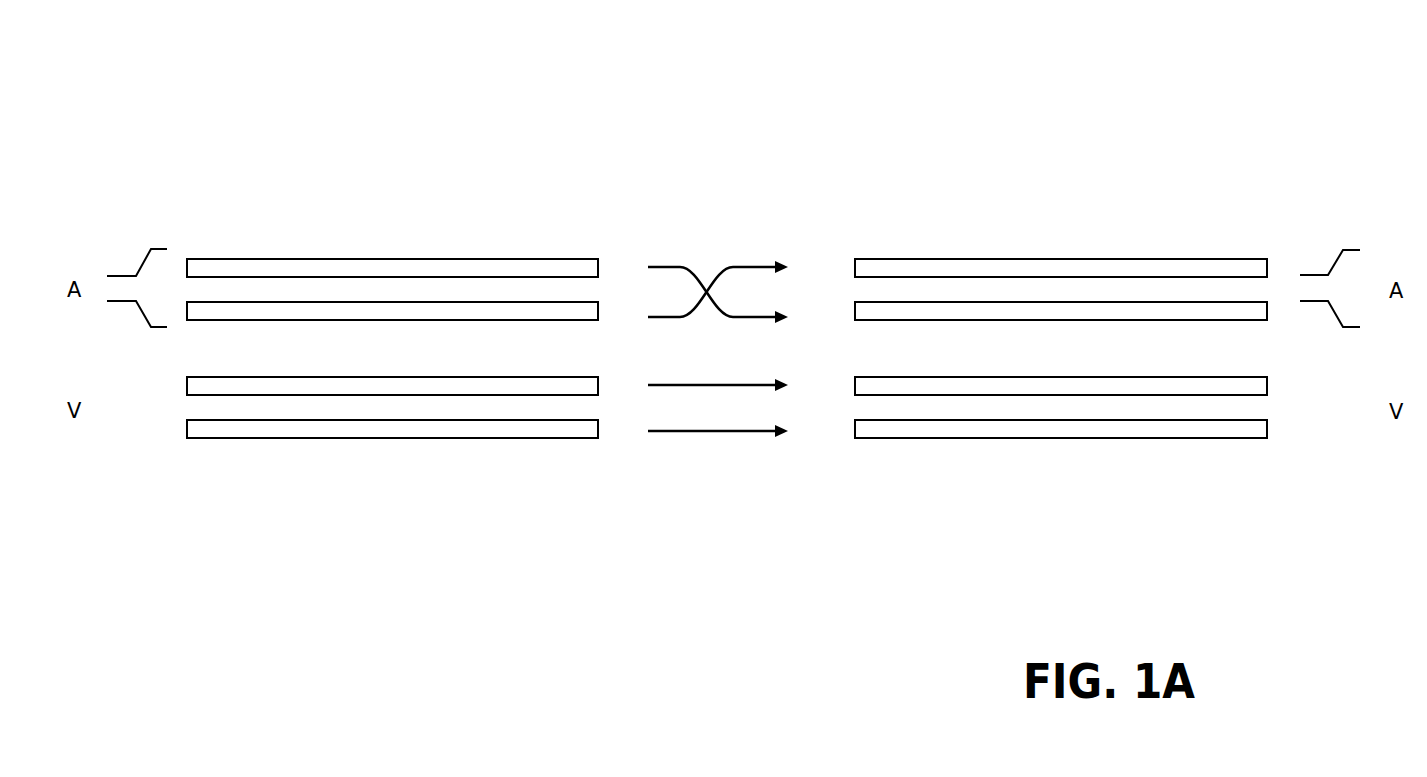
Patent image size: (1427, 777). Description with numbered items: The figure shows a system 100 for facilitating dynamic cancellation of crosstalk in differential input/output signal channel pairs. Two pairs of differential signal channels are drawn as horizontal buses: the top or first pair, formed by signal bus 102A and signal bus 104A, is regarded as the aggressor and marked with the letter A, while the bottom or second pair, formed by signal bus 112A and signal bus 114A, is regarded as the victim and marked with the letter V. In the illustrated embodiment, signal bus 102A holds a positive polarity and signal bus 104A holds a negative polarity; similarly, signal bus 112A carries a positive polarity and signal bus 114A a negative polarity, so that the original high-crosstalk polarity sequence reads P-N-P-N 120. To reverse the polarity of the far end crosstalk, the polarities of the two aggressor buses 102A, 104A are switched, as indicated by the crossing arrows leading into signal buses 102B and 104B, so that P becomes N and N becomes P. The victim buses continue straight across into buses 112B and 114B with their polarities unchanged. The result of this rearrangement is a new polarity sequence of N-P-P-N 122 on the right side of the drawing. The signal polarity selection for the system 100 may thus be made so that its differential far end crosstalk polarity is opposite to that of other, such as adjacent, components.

The system 100 is at (1168, 105).
The signal bus 102A is at (248, 259).
The signal bus 104A is at (338, 302).
The signal bus 112A is at (345, 395).
The signal bus 114A is at (253, 438).
The signal bus 102B is at (938, 259).
The signal bus 104B is at (1043, 302).
The signal bus 112B is at (902, 395).
The signal bus 114B is at (1048, 438).
The polarity sequence P-N-P-N 120 is at (618, 248).
The polarity sequence N-P-P-N 122 is at (825, 248).